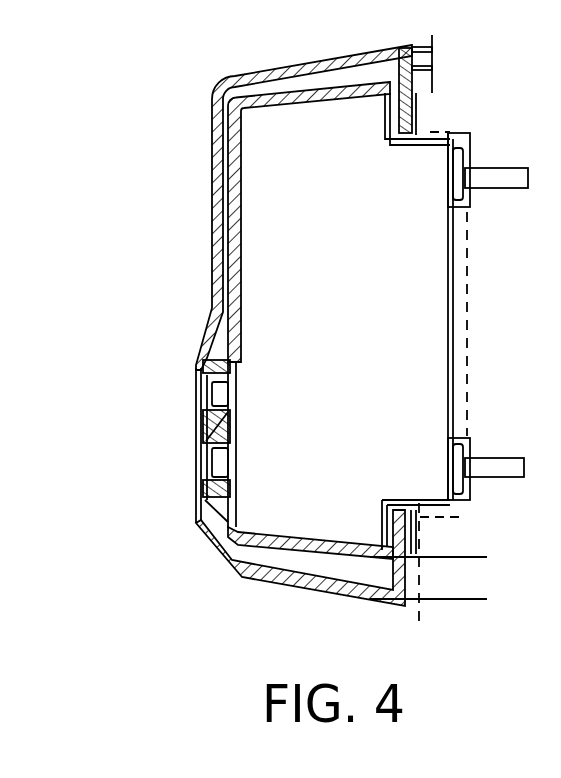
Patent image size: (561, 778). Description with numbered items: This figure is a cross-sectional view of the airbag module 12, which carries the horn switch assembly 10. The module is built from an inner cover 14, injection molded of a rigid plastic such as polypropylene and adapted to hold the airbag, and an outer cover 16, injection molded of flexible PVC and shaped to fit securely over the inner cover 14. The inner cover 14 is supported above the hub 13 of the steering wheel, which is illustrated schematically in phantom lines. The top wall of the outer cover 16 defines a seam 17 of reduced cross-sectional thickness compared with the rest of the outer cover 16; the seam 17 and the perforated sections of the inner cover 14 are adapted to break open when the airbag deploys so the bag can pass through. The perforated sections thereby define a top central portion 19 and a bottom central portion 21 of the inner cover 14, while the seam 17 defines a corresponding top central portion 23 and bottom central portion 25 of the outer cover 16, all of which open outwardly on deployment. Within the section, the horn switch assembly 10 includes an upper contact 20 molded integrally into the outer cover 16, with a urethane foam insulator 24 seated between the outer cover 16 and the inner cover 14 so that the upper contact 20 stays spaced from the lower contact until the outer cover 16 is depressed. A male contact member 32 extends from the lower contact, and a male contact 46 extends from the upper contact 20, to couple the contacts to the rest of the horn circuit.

The horn switch assembly 10 is at (249, 371).
The airbag module 12 is at (194, 128).
The hub 13 is at (452, 66).
The inner cover 14 is at (305, 105).
The outer cover 16 is at (222, 95).
The seam 17 is at (214, 312).
The top central portion 19 is at (240, 197).
The upper contact 20 is at (207, 381).
The bottom central portion 21 is at (236, 463).
The top central portion 23 is at (212, 172).
The foam insulator 24 is at (218, 432).
The bottom central portion 25 is at (198, 475).
The male contact member 32 is at (480, 532).
The male contact 46 is at (474, 600).